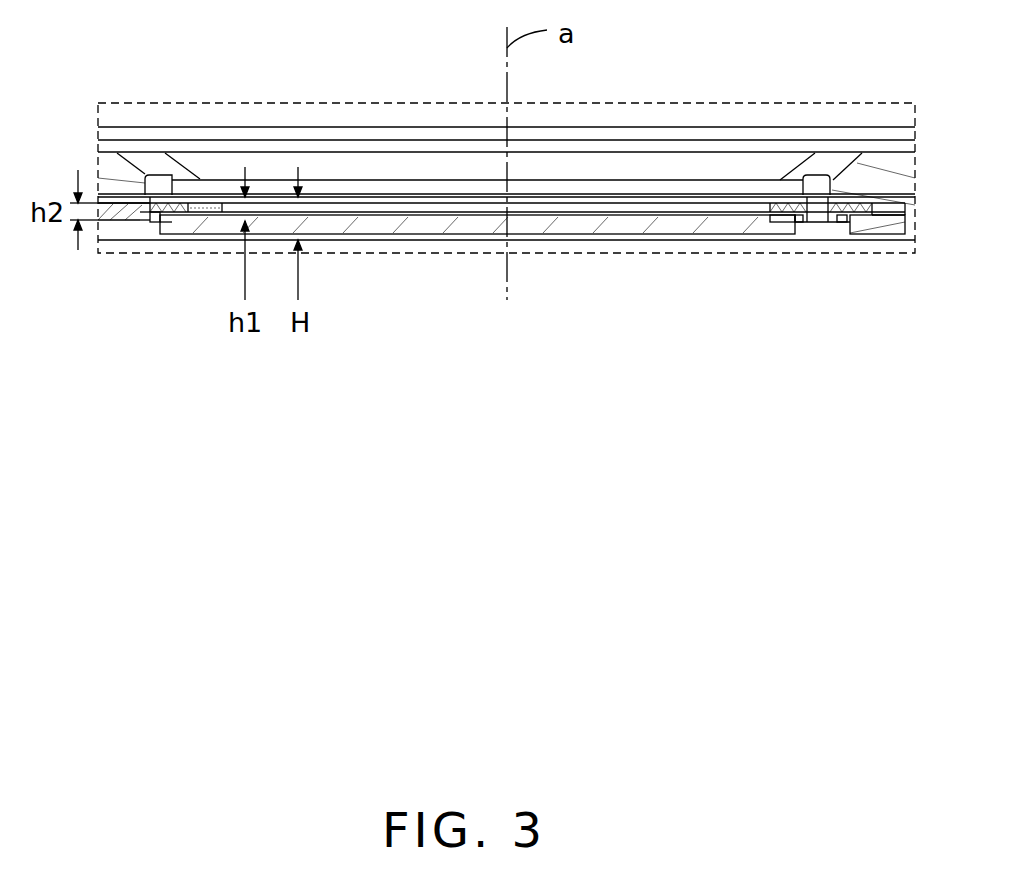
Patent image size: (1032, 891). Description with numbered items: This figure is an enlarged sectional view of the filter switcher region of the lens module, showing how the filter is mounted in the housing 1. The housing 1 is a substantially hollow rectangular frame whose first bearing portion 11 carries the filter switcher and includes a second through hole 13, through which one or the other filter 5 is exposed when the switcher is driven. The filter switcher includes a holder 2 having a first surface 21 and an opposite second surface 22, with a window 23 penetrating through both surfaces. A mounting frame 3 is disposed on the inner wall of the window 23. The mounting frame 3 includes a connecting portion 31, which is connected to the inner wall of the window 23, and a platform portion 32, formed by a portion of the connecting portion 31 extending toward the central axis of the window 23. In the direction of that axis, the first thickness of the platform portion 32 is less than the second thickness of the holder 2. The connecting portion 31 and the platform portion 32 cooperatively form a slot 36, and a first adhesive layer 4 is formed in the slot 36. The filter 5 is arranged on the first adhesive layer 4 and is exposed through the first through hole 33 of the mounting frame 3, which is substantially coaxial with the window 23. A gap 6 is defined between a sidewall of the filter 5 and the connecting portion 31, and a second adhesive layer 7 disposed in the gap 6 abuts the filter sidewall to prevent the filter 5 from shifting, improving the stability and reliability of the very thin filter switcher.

The housing 1 is at (913, 55).
The first bearing portion 11 is at (862, 173).
The second through hole 13 is at (821, 151).
The holder 2 is at (108, 285).
The first surface 21 is at (137, 223).
The second surface 22 is at (117, 204).
The window 23 is at (131, 221).
The mounting frame 3 is at (501, 185).
The connecting portion 31 is at (146, 213).
The platform portion 32 is at (163, 210).
The first through hole 33 is at (677, 208).
The slot 36 is at (171, 217).
The first adhesive layer 4 is at (866, 216).
The filter 5 is at (367, 223).
The gap 6 is at (854, 230).
The second adhesive layer 7 is at (842, 218).